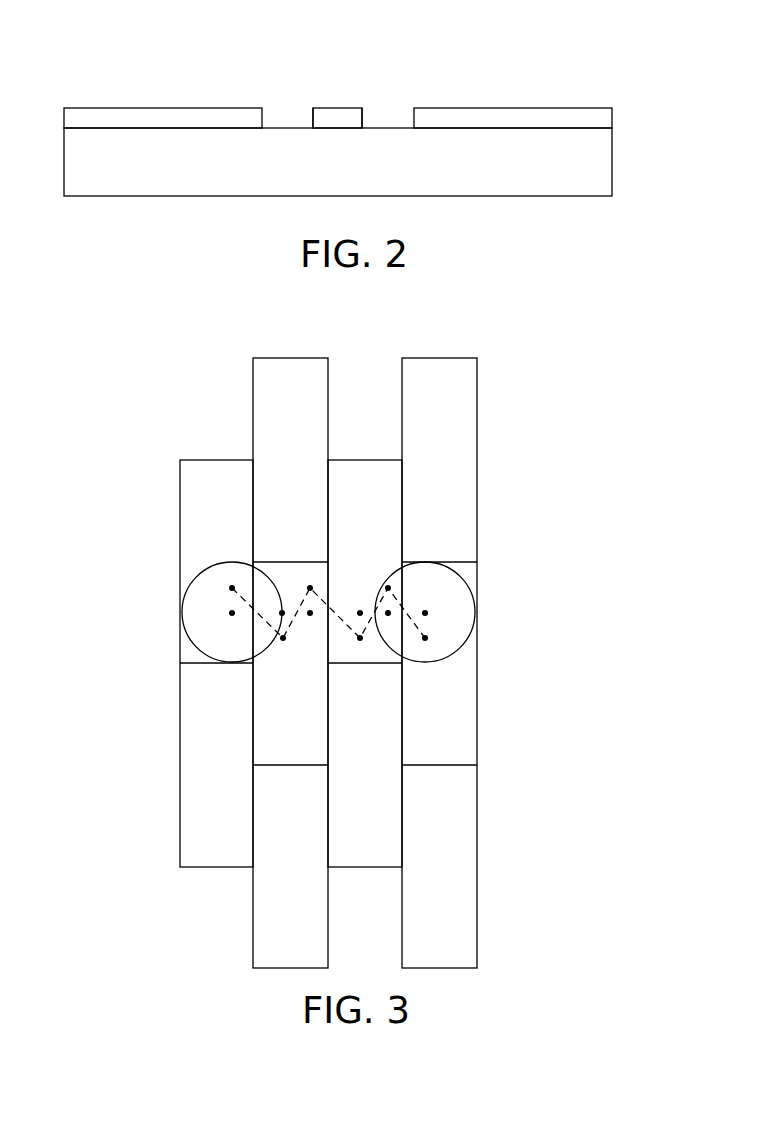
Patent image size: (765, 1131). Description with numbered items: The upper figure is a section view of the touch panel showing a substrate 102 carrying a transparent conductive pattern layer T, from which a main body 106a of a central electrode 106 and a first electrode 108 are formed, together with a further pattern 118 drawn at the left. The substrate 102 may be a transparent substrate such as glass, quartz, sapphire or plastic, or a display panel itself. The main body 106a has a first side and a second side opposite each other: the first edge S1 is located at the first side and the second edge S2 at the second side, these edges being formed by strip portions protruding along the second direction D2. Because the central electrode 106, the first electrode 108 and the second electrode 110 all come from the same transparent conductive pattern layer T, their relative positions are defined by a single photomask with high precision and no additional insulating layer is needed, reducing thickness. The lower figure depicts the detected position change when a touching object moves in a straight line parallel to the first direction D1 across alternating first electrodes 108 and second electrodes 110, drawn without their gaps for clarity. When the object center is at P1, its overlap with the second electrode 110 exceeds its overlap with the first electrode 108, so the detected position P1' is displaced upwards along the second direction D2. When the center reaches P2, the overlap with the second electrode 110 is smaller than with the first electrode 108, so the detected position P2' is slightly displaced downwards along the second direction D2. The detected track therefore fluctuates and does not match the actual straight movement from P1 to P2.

In FIG. 2, the substrate 102 is at (359, 180).
In FIG. 2, the pixel electrode / conductive layer 118 is at (166, 118).
In FIG. 2, the main body 106a is at (340, 118).
In FIG. 2, the central electrode 106 is at (344, 65).
In FIG. 2, the first electrode 108 is at (496, 118).
In FIG. 3, the first electrode 108 is at (290, 395).
In FIG. 3, the second electrode 110 is at (217, 485).
In FIG. 2, the first edge S1 is at (362, 118).
In FIG. 2, the second edge S2 is at (313, 118).
In FIG. 2, the transparent conductive pattern layer T is at (622, 114).
In FIG. 3, the center position of the touching object P1 is at (229, 654).
In FIG. 3, the detected position P1' is at (166, 584).
In FIG. 3, the center position of the touching object P2 is at (405, 560).
In FIG. 3, the detected position P2' is at (405, 668).
In FIG. 3, the first direction D1 is at (559, 957).
In FIG. 3, the second direction D2 is at (559, 957).